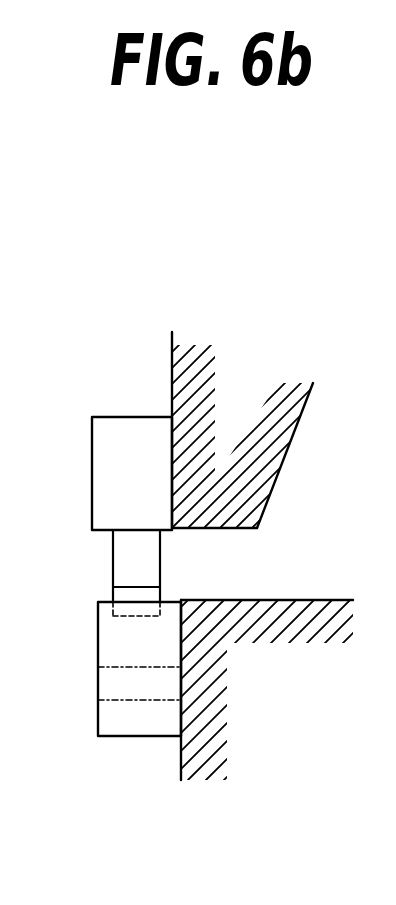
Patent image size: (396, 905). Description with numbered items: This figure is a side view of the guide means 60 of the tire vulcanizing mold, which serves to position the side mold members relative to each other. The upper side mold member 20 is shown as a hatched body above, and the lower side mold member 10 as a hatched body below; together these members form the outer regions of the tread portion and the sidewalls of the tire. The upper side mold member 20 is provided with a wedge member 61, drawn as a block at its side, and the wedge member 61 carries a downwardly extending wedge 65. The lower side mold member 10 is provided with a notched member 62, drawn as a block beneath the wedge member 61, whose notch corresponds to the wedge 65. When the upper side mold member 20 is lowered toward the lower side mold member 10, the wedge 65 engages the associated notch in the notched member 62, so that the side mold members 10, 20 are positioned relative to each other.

The lower side mold member 10 is at (259, 673).
The upper side mold member 20 is at (237, 368).
The guide means 60 is at (104, 515).
The wedge member 61 is at (115, 442).
The notched member 62 is at (132, 713).
The wedge 65 is at (132, 562).